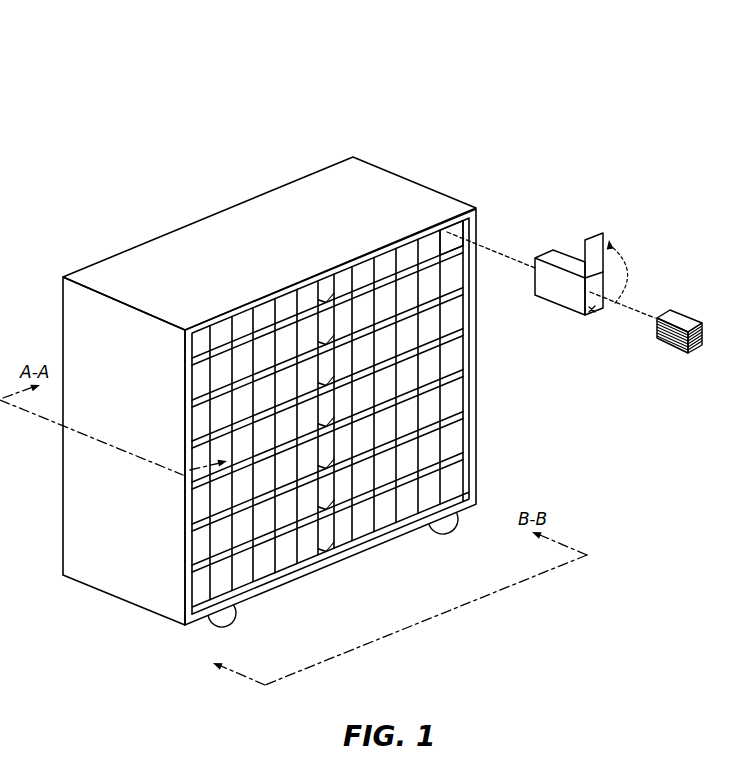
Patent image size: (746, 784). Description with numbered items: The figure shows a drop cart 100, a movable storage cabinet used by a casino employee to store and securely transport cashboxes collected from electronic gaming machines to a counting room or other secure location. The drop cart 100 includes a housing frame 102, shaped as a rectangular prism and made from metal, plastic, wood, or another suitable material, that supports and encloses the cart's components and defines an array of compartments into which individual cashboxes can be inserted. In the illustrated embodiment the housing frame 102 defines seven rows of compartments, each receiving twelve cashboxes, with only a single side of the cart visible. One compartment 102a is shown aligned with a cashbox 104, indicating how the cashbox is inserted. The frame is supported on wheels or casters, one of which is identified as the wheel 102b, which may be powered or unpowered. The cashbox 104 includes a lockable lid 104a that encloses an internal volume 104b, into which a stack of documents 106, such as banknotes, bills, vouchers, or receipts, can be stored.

The drop cart 100 is at (153, 80).
The housing frame 102 is at (413, 183).
The compartment 102a is at (480, 249).
The wheel 102b is at (224, 618).
The cashbox 104 is at (572, 257).
The lockable lid 104a is at (607, 254).
The internal volume 104b is at (592, 313).
The stack of documents 106 is at (691, 362).